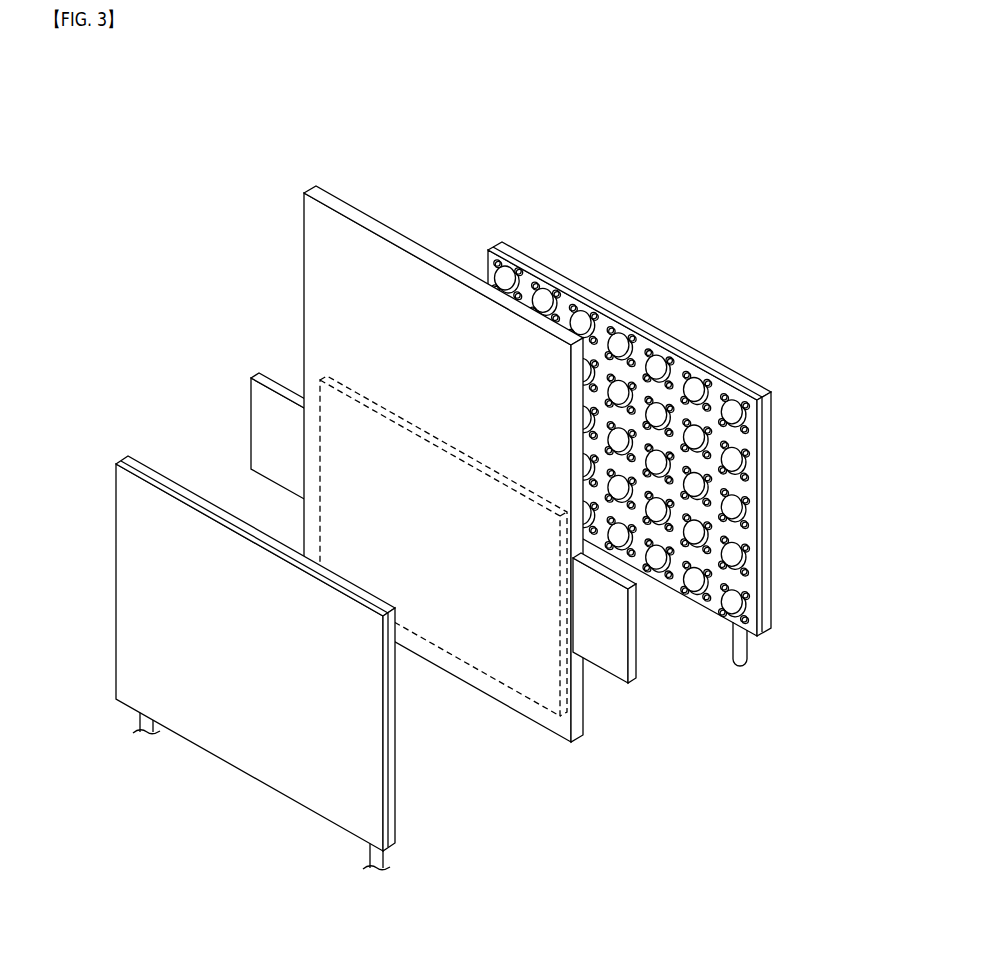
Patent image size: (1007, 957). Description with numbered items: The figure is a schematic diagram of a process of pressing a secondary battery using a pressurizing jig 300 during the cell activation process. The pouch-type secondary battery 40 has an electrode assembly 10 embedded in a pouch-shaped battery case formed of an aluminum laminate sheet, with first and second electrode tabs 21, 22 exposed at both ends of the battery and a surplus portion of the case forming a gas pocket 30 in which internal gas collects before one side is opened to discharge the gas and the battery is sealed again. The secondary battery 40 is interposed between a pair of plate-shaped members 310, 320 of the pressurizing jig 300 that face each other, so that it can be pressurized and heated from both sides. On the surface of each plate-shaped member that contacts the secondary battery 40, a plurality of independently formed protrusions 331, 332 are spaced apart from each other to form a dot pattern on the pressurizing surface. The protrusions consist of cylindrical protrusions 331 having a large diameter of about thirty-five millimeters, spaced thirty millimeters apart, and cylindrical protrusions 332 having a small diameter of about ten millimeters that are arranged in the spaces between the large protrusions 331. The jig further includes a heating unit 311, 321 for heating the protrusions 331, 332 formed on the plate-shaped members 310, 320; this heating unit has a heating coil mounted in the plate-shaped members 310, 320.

The pressurizing jig 300 is at (133, 125).
The secondary battery 40 is at (262, 207).
The gas pocket 30 is at (322, 297).
The electrode assembly 10 is at (538, 678).
The first electrode tab 21 is at (638, 652).
The second electrode tab 22 is at (250, 400).
The plate-shaped member 310 is at (641, 320).
The heating unit 321 is at (745, 588).
The large-diameter cylindrical protrusion 331 is at (693, 488).
The small-diameter cylindrical protrusion 332 is at (703, 507).
The plate-shaped member 320 is at (114, 517).
The heating unit 311 is at (375, 780).